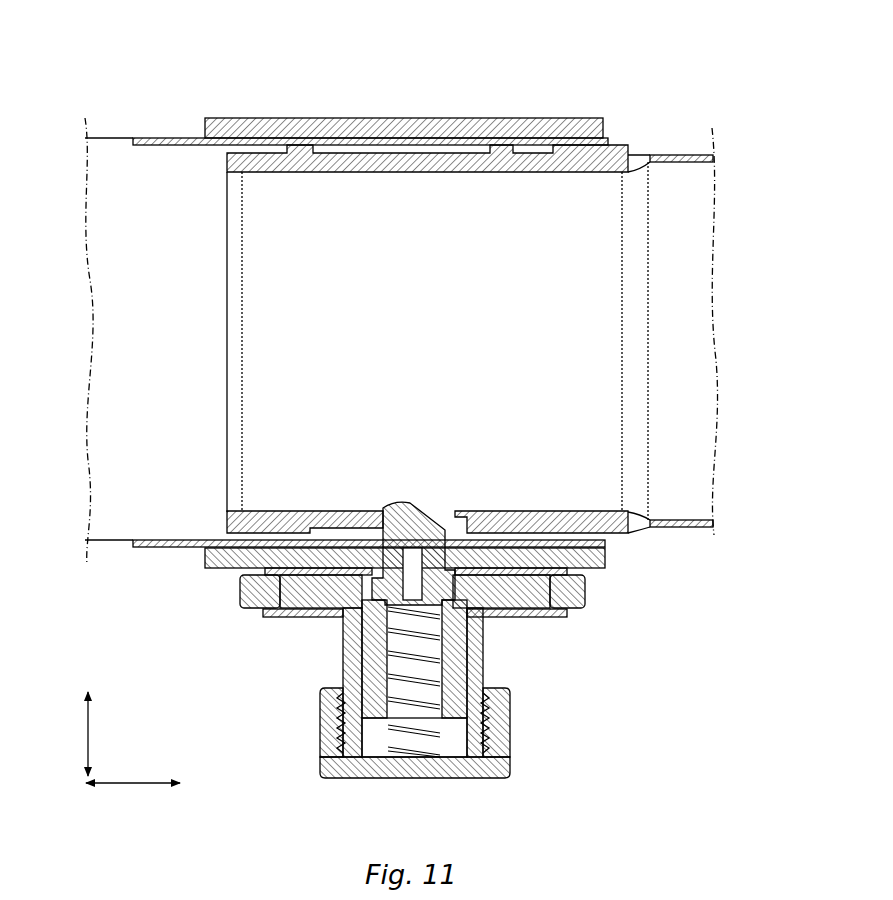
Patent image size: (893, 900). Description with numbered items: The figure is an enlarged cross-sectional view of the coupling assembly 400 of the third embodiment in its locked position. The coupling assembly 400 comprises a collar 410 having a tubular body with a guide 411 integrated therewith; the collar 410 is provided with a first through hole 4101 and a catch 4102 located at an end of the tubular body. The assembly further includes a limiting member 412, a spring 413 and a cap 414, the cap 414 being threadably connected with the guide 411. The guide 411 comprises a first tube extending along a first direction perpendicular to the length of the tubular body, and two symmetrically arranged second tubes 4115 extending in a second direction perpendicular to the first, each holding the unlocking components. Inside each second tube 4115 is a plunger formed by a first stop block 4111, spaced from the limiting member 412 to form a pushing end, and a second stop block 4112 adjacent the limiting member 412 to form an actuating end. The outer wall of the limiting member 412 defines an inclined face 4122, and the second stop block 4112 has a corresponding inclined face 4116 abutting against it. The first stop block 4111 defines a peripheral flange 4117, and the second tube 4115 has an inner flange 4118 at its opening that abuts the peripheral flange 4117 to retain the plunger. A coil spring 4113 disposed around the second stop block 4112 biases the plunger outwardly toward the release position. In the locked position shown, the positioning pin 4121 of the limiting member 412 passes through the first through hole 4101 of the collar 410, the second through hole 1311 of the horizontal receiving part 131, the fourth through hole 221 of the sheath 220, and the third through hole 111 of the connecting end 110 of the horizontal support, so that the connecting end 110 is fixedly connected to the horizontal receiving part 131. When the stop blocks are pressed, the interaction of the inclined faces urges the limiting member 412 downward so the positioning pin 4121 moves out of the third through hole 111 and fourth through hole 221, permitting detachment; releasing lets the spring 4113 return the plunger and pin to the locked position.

The coupling assembly 400 is at (288, 57).
The horizontal receiving part 131 is at (133, 542).
The collar 410 is at (303, 118).
The catch 4102 is at (607, 133).
The connecting end 110 is at (477, 176).
The third through hole 111 is at (385, 508).
The sheath 220 is at (268, 175).
The fourth through hole 221 is at (463, 511).
The positioning pin 4121 is at (412, 507).
The second tube 4115 is at (300, 575).
The first through hole 4101 is at (267, 577).
The second through hole 1311 is at (585, 570).
The peripheral flange 4117 is at (578, 606).
The first stop block 4111 is at (243, 587).
The second stop block 4112 is at (282, 611).
The spring 4113 is at (345, 612).
The inclined face 4116 is at (487, 640).
The inner flange 4118 is at (560, 615).
The guide 411 is at (335, 695).
The inclined face 4122 is at (517, 617).
The spring 413 is at (510, 757).
The cap 414 is at (320, 765).
The limiting member 412 is at (385, 728).